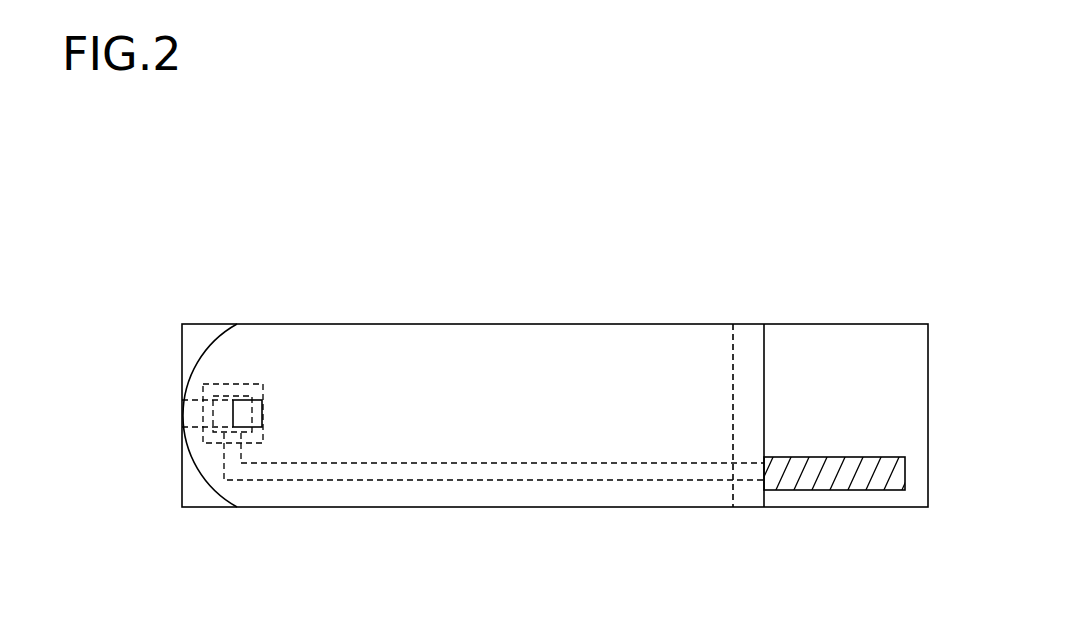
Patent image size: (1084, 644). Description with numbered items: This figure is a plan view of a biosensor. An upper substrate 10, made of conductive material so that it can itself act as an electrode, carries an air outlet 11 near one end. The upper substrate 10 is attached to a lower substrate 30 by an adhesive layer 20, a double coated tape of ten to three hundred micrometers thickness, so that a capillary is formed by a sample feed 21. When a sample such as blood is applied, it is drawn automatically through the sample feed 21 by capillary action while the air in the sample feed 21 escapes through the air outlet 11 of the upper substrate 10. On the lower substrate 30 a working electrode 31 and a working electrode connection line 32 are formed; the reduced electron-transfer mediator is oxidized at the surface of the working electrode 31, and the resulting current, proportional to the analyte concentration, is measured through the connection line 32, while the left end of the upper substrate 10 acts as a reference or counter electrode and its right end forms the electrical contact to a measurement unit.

The upper substrate 10 is at (577, 355).
The air outlet 11 is at (245, 410).
The adhesive layer 20 is at (738, 362).
The sample feed 21 is at (192, 417).
The lower substrate 30 is at (885, 360).
The working electrode 31 is at (225, 413).
The working electrode connection line 32 is at (855, 475).